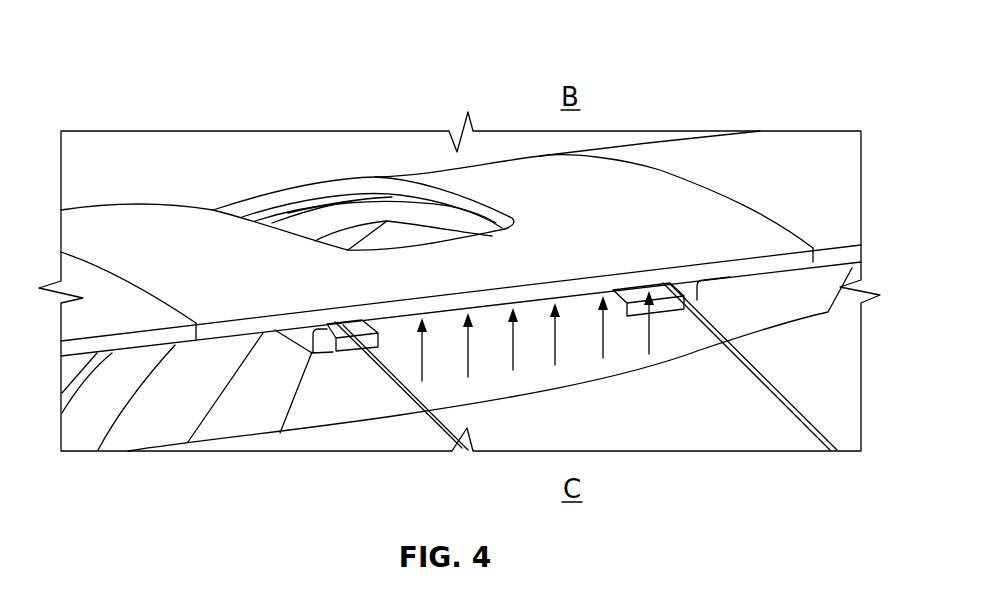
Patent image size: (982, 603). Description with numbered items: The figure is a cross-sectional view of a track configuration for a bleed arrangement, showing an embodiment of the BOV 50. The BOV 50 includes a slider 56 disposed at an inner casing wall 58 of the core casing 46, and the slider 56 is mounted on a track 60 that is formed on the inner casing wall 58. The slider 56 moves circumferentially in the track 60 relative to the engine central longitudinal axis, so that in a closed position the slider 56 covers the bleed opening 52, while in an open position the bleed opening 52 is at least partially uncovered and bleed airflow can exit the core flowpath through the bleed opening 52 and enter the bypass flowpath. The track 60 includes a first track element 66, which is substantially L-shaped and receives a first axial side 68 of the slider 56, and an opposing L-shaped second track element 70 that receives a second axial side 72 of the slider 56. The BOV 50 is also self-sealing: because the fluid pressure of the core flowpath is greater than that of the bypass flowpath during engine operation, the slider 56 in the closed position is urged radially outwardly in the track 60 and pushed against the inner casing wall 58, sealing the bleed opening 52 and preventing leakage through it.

The BOV 50 is at (172, 38).
The core casing 46 is at (793, 165).
The bleed opening 52 is at (377, 177).
The inner casing wall 58 is at (125, 342).
The first track element 66 is at (320, 333).
The track 60 is at (340, 343).
The first axial side 68 is at (438, 425).
The slider 56 is at (632, 402).
The second track element 70 is at (696, 300).
The second axial side 72 is at (773, 377).